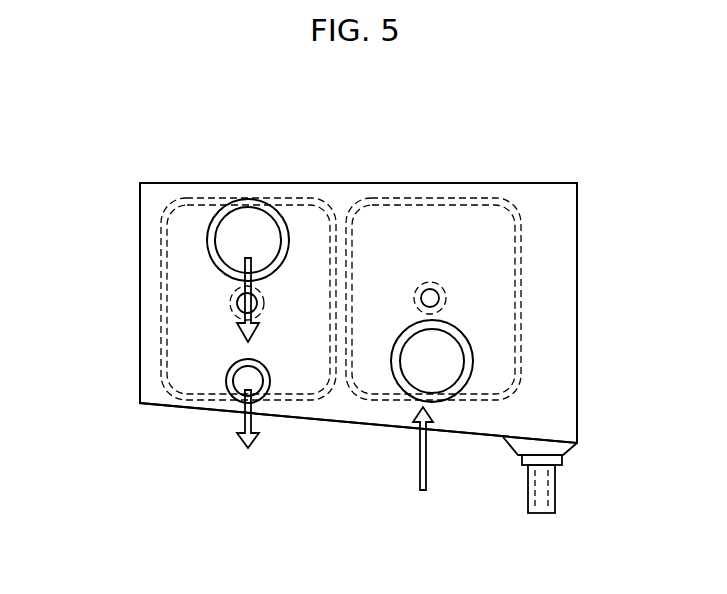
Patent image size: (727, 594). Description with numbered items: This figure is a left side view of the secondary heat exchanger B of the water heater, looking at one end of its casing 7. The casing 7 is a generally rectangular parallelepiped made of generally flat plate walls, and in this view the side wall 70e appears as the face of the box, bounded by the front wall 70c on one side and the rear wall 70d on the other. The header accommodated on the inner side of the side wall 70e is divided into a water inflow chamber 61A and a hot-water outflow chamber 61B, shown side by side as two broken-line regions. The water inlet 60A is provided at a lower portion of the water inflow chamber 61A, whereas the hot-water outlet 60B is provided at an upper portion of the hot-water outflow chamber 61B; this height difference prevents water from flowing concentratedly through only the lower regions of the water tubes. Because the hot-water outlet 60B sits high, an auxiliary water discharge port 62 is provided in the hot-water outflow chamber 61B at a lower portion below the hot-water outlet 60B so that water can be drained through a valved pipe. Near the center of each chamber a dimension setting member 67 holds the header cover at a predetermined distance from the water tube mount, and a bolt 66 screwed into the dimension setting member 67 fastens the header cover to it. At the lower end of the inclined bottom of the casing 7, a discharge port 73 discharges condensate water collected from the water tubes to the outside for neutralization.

The secondary heat exchanger B is at (539, 113).
The casing 7 is at (542, 192).
The rear wall 70d is at (140, 270).
The side wall 70e is at (558, 257).
The front wall 70c is at (577, 297).
The hot-water outflow chamber 61B is at (308, 232).
The water inflow chamber 61A is at (465, 230).
The hot-water outlet 60B is at (248, 223).
The water inlet 60A is at (435, 380).
The auxiliary water discharge port 62 is at (252, 382).
The bolt 66 is at (258, 304).
The dimension setting member 67 is at (262, 300).
The discharge port 73 is at (542, 518).